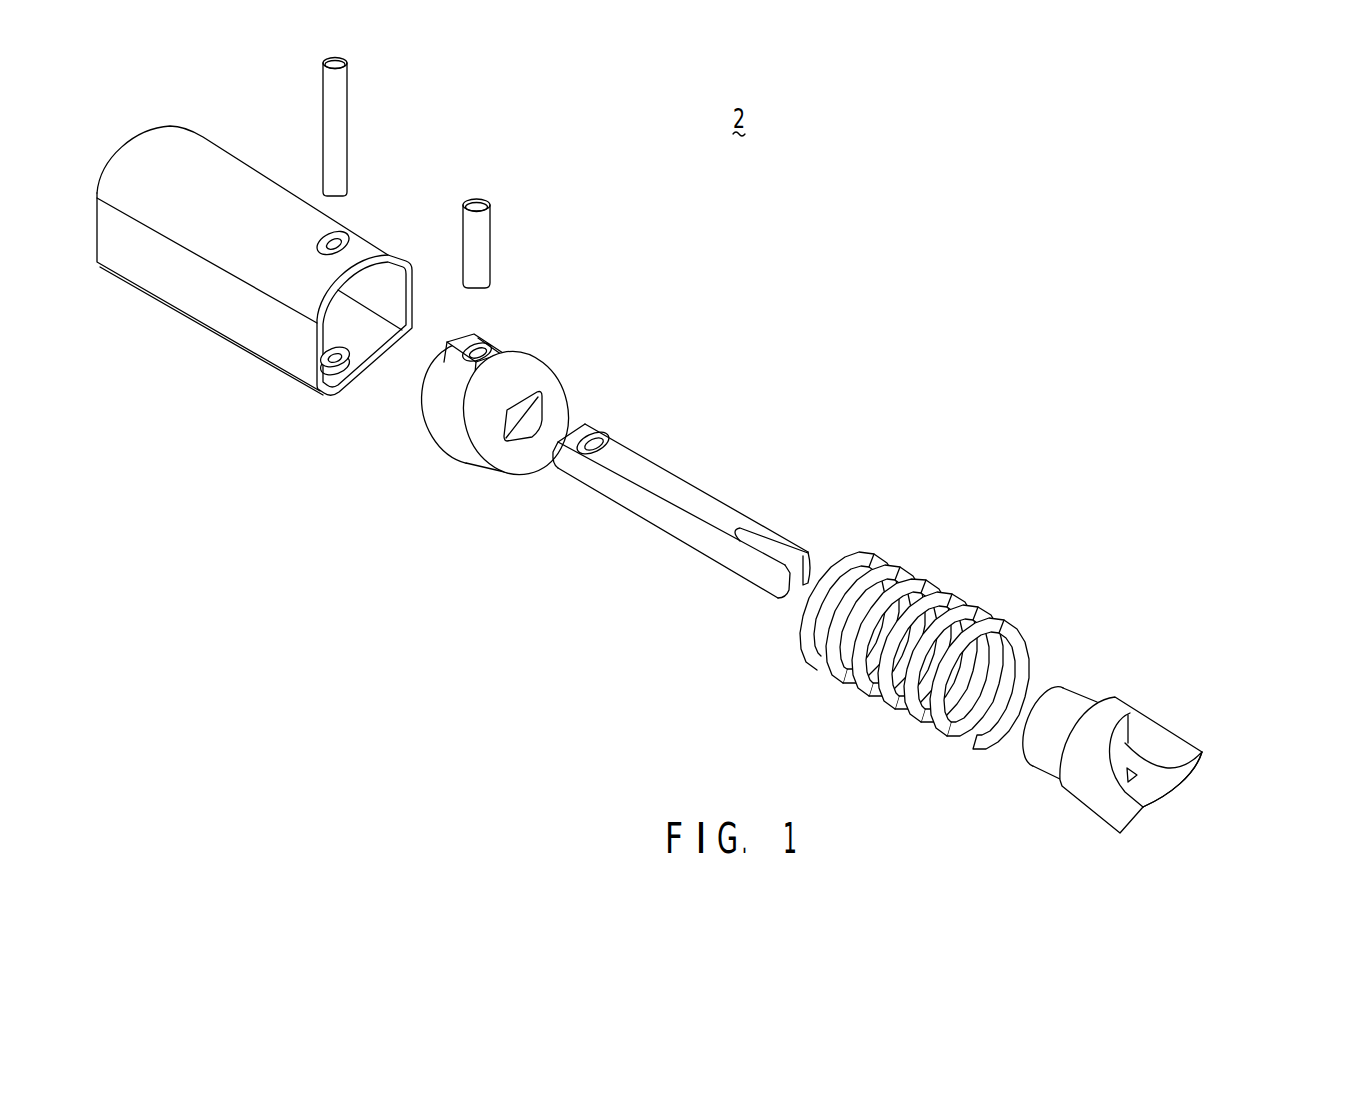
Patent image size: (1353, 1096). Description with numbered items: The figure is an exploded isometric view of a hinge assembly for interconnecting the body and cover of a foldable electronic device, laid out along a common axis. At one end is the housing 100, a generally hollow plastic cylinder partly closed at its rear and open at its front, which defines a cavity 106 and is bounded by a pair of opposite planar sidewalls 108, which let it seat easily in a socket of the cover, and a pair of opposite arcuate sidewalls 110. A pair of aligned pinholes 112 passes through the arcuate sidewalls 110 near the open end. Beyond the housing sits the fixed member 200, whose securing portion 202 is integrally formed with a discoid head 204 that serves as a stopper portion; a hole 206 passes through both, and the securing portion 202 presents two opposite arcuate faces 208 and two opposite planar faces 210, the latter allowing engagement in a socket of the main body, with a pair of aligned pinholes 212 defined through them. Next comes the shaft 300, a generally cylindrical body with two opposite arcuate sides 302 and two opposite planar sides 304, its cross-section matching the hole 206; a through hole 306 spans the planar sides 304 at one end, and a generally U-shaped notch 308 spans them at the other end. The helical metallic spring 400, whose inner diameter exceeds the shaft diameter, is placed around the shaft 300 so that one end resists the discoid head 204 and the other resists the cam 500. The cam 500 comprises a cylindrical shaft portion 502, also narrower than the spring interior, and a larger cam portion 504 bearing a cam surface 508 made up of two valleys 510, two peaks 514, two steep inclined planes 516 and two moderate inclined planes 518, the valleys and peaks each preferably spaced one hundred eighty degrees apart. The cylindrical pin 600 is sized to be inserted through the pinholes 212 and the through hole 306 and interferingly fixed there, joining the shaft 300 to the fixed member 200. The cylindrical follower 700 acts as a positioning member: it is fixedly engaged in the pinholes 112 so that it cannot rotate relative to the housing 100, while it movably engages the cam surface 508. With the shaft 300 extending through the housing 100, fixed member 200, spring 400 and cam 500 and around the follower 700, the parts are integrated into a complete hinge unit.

The housing 100 is at (262, 274).
The cavity 106 is at (390, 293).
The planar sidewalls 108 is at (172, 280).
The arcuate sidewalls 110 is at (198, 162).
The pinholes 112 is at (333, 242).
The fixed member 200 is at (492, 386).
The securing portion 202 is at (488, 337).
The discoid head 204 is at (475, 447).
The hole 206 is at (527, 407).
The arcuate faces 208 is at (443, 393).
The planar faces 210 is at (457, 347).
The pinholes 212 is at (482, 356).
The shaft 300 is at (679, 499).
The arcuate sides 302 is at (605, 482).
The planar sides 304 is at (650, 472).
The through hole 306 is at (597, 443).
The U-shaped notch 308 is at (772, 545).
The spring 400 is at (953, 578).
The cam 500 is at (1175, 717).
The shaft portion 502 is at (1058, 707).
The cam portion 504 is at (1097, 800).
The cam surface 508 is at (1225, 750).
The valleys 510 is at (1130, 722).
The peaks 514 is at (1186, 765).
The steep inclined planes 516 is at (1168, 742).
The moderate inclined planes 518 is at (1212, 783).
The pin 600 is at (483, 233).
The follower 700 is at (340, 100).